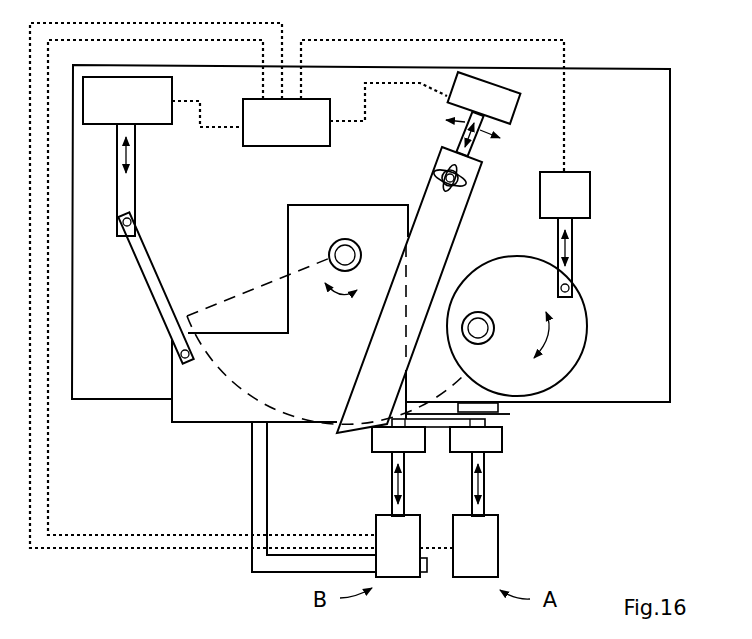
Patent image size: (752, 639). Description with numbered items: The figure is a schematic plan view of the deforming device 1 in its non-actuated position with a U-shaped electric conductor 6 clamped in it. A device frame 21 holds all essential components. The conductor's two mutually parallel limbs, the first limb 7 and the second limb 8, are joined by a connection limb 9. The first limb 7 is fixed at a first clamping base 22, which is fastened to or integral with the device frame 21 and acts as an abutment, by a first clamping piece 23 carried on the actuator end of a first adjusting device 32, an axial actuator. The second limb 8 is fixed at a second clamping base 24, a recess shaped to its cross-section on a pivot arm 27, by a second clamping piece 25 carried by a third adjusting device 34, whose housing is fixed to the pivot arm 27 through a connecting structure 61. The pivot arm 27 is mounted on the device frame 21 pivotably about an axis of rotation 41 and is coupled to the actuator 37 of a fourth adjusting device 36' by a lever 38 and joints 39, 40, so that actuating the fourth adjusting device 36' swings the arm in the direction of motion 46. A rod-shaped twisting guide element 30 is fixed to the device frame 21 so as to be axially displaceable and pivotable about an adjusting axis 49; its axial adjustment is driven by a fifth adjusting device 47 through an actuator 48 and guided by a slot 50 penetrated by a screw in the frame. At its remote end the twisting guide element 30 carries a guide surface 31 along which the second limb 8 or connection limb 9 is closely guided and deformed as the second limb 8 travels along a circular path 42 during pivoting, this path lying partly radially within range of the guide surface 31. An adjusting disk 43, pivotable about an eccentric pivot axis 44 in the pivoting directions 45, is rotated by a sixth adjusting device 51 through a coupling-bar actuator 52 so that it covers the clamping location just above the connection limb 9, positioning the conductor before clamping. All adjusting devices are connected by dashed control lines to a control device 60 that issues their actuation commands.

The deforming device 1 is at (648, 484).
The U-shaped electric conductor 6 is at (441, 430).
The connection limb 9 is at (441, 430).
The first limb 7 is at (472, 430).
The second limb 8 is at (387, 434).
The device frame 21 is at (580, 138).
The first clamping base 22 is at (500, 409).
The first clamping piece 23 is at (493, 454).
The second clamping base 24 is at (398, 403).
The second clamping piece 25 is at (378, 453).
The pivot arm 27 is at (208, 424).
The twisting guide element 30 is at (466, 213).
The guide surface 31 is at (403, 430).
The first adjusting device 32 is at (463, 558).
The third adjusting device 34 is at (385, 558).
The fourth adjusting device 36' is at (127, 100).
The actuator 37 is at (135, 183).
The lever 38 is at (155, 262).
The joint 39 is at (133, 220).
The joint 40 is at (182, 354).
The axis of rotation 41 is at (344, 248).
The circular path 42 is at (217, 367).
The adjusting disk 43 is at (586, 343).
The eccentric pivot axis 44 is at (482, 328).
The pivoting directions 45 is at (548, 330).
The direction of motion 46 is at (340, 300).
The fifth adjusting device 47 is at (471, 109).
The actuator 48 is at (477, 143).
The adjusting axis 49 is at (437, 170).
The slot 50 is at (430, 189).
The sixth adjusting device 51 is at (552, 206).
The actuator 52 is at (573, 245).
The control device 60 is at (273, 134).
The connecting structure 61 is at (252, 508).